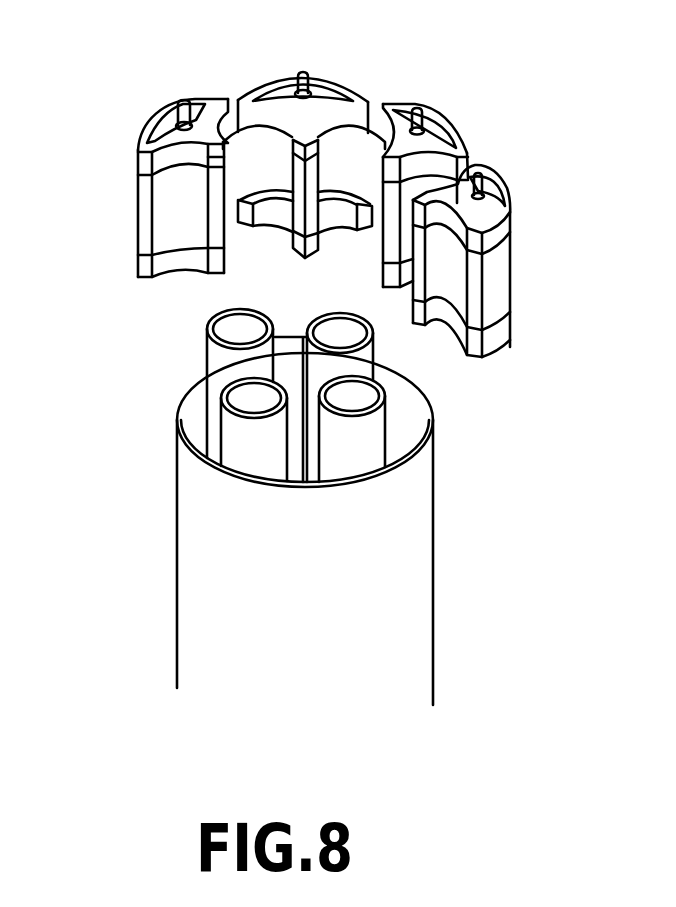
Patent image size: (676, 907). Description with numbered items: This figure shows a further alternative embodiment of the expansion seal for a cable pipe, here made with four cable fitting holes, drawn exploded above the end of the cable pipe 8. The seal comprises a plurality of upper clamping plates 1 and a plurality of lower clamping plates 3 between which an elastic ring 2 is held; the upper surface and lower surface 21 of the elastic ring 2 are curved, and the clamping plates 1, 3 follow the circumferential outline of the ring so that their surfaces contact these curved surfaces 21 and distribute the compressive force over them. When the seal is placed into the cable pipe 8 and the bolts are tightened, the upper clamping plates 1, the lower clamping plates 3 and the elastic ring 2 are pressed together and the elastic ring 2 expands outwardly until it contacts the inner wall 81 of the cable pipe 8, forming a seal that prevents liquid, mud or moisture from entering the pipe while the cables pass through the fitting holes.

The upper clamping plate 1 is at (388, 107).
The elastic ring 2 is at (147, 201).
The upper surface and lower surface of the elastic ring 21 is at (232, 115).
The lower clamping plate 3 is at (488, 345).
The cable pipe 8 is at (423, 548).
The inner wall of the cable pipe 81 is at (425, 405).